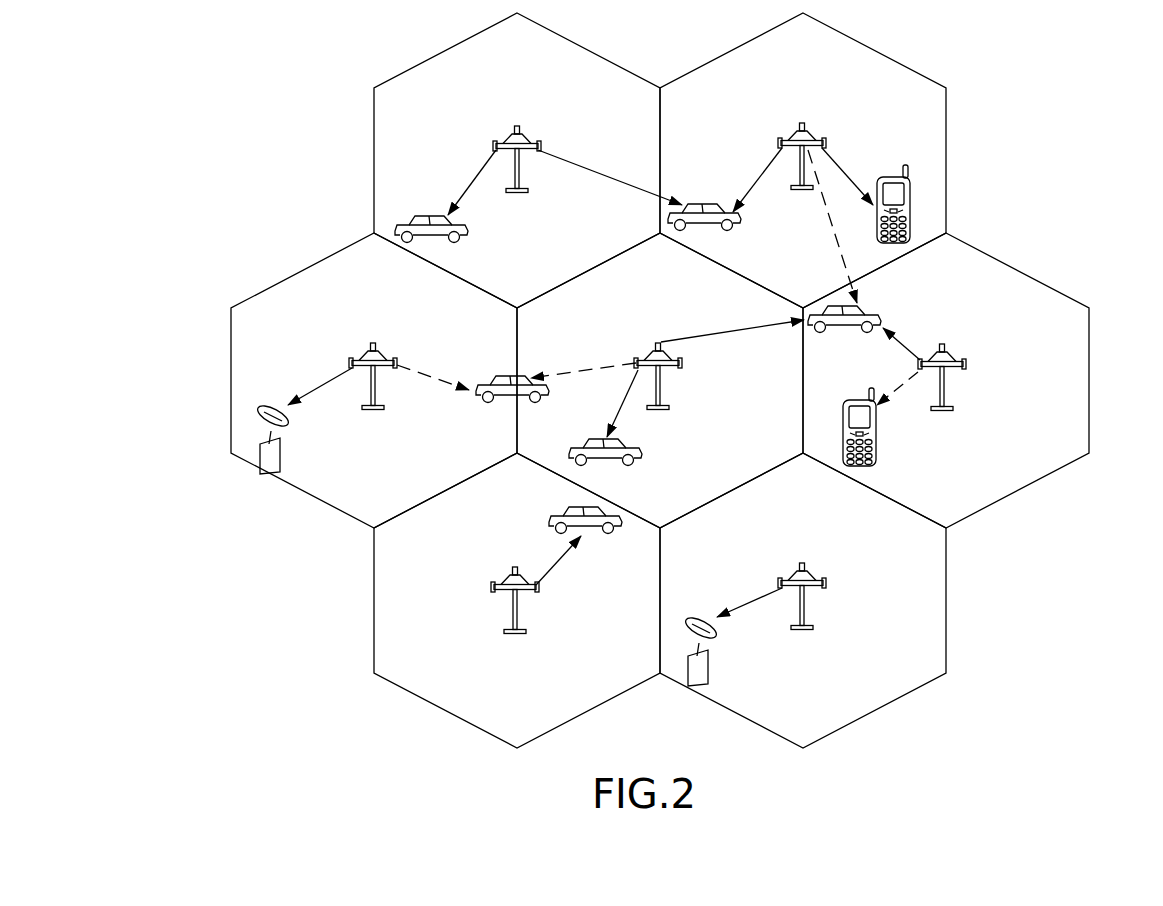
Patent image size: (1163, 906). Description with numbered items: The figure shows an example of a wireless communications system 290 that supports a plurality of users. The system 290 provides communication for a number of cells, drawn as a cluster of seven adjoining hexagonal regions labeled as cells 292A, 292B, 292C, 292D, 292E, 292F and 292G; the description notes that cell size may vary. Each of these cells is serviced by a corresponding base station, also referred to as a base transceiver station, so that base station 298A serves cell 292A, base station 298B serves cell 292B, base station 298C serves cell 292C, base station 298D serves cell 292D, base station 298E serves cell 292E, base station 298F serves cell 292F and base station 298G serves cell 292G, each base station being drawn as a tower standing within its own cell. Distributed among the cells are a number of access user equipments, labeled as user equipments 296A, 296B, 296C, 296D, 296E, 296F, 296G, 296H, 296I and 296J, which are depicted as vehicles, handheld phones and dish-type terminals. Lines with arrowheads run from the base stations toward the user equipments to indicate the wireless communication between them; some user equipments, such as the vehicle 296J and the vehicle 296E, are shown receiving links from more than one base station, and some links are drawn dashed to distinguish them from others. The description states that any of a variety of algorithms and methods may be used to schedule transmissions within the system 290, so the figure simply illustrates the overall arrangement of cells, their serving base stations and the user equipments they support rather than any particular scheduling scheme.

The wireless communications system 290 is at (170, 96).
The cell 292A is at (539, 56).
The cell 292B is at (825, 56).
The cell 292C is at (396, 284).
The cell 292D is at (682, 282).
The cell 292E is at (968, 284).
The cell 292F is at (539, 496).
The cell 292G is at (825, 497).
The base station 298A is at (518, 126).
The base station 298B is at (803, 123).
The base station 298C is at (374, 343).
The base station 298D is at (659, 343).
The base station 298E is at (943, 344).
The base station 298F is at (516, 567).
The base station 298G is at (803, 563).
The access user equipment 296A is at (467, 236).
The access user equipment 296B is at (889, 177).
The access user equipment 296C is at (280, 452).
The access user equipment 296D is at (641, 459).
The access user equipment 296E is at (838, 333).
The access user equipment 296F is at (617, 533).
The access user equipment 296G is at (708, 663).
The access user equipment 296H is at (479, 403).
The access user equipment 296I is at (876, 456).
The access user equipment 296J is at (704, 205).